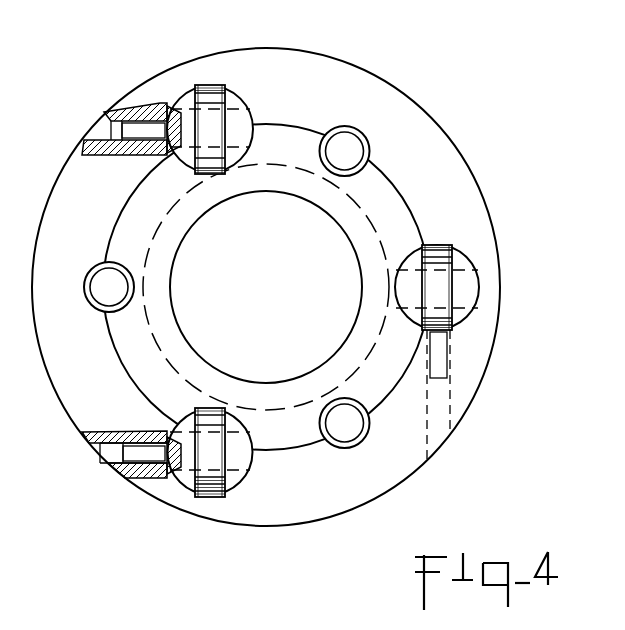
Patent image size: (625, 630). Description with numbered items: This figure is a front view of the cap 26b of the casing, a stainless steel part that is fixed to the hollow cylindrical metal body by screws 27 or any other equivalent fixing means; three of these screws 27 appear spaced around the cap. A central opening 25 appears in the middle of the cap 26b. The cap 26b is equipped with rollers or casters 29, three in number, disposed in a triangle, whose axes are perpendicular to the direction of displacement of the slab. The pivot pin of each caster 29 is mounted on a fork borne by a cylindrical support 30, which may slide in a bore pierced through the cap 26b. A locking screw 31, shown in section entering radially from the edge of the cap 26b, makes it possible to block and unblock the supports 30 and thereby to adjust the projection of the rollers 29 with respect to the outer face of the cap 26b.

The central bore 25 is at (268, 284).
The cap 26b is at (445, 180).
The screws 27 is at (338, 152).
The rollers or casters 29 is at (208, 84).
The cylindrical support 30 is at (238, 118).
The locking screw 31 is at (135, 125).